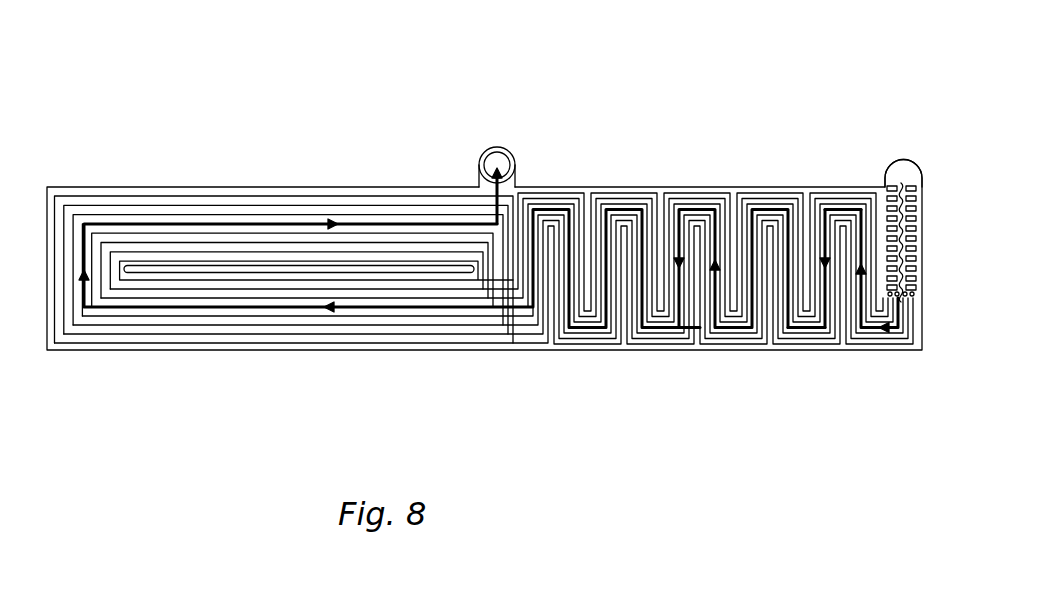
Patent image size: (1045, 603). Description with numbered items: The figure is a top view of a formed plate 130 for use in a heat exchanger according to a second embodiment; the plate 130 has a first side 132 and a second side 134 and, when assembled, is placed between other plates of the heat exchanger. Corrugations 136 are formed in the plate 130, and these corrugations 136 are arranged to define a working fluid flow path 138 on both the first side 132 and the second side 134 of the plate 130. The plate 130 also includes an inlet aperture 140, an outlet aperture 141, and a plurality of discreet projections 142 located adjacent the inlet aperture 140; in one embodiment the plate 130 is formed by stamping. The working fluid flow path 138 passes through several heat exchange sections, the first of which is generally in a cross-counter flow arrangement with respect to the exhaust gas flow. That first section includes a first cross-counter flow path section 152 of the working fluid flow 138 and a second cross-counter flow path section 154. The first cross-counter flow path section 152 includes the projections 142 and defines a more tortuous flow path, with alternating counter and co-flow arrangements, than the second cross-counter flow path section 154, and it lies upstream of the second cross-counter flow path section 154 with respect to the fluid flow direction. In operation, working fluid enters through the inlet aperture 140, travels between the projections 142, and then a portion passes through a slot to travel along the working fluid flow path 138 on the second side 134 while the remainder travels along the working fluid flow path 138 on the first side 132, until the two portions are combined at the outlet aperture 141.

The formed plate 130 is at (453, 100).
The first side 132 is at (380, 198).
The outlet aperture 141 is at (509, 150).
The second side 134 is at (599, 190).
The working fluid flow path 138 is at (708, 190).
The corrugations 136 is at (836, 190).
The first cross-counter flow path section 152 is at (889, 183).
The inlet aperture 140 is at (903, 160).
The second cross-counter flow path section 154 is at (806, 326).
The discreet projections 142 is at (906, 280).